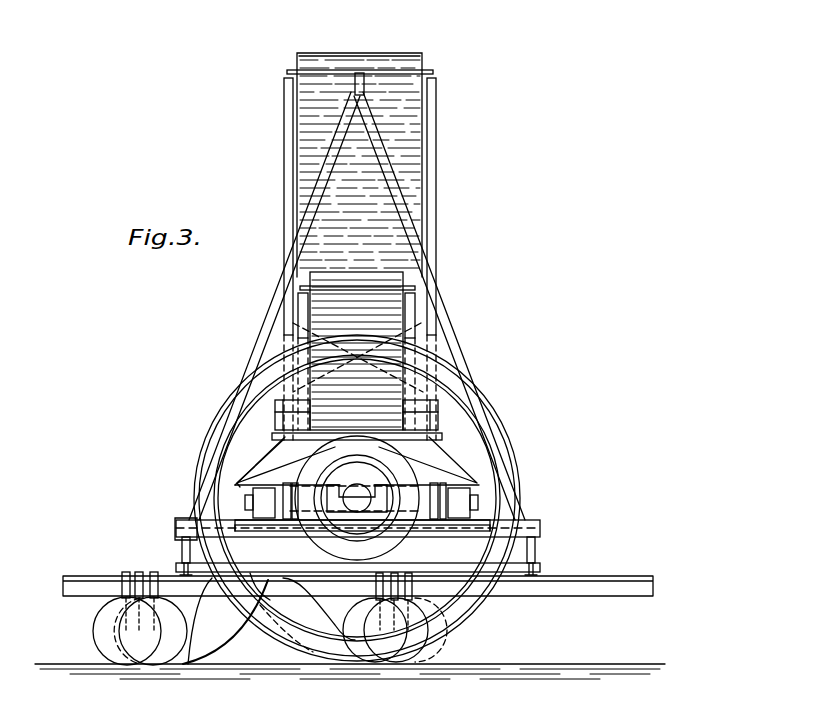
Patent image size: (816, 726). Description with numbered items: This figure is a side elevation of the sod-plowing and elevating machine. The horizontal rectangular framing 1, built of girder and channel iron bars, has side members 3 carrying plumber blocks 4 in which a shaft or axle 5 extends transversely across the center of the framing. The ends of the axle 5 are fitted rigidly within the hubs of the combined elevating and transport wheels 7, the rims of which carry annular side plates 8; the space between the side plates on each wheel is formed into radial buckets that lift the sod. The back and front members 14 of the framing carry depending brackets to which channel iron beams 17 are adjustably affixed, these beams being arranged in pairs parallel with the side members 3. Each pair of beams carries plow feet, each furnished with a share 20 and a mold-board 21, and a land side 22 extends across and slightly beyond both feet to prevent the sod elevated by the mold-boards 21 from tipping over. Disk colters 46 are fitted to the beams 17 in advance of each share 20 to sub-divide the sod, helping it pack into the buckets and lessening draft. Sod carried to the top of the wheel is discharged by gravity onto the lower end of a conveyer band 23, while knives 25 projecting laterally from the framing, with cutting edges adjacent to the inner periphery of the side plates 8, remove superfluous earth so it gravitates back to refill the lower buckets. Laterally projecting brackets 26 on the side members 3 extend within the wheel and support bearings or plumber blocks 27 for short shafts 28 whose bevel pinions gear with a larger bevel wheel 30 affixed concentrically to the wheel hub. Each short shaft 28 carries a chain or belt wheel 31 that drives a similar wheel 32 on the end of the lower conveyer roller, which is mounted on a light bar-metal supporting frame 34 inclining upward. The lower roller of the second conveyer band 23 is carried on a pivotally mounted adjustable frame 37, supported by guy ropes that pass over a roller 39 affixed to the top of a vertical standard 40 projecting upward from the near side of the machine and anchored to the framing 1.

The horizontal rectangular framing 1 is at (178, 521).
The side members 3 is at (275, 531).
The plumber blocks 4 is at (352, 490).
The shaft or axle 5 is at (362, 490).
The combined elevating and transport wheel 7 is at (512, 445).
The annular side plates 8 is at (218, 428).
The back and front members 14 is at (182, 548).
The channel iron beams 17 is at (77, 583).
The share 20 is at (158, 665).
The mold-board 21 is at (271, 618).
The land side 22 is at (226, 622).
The conveyer band 23 is at (425, 56).
The knives 25 is at (243, 552).
The laterally projecting brackets 26 is at (358, 513).
The bearings or plumber blocks 27 is at (457, 452).
The short shafts 28 is at (525, 490).
The bevel wheel 30 is at (395, 455).
The chain or belt wheel 31 is at (292, 534).
The chain or belt wheel 32 is at (278, 412).
The supporting frame 34 is at (262, 455).
The pivotally mounted adjustable frame 37 is at (290, 160).
The roller 39 is at (359, 76).
The vertical standard 40 is at (398, 176).
The disk colters 46 is at (102, 637).